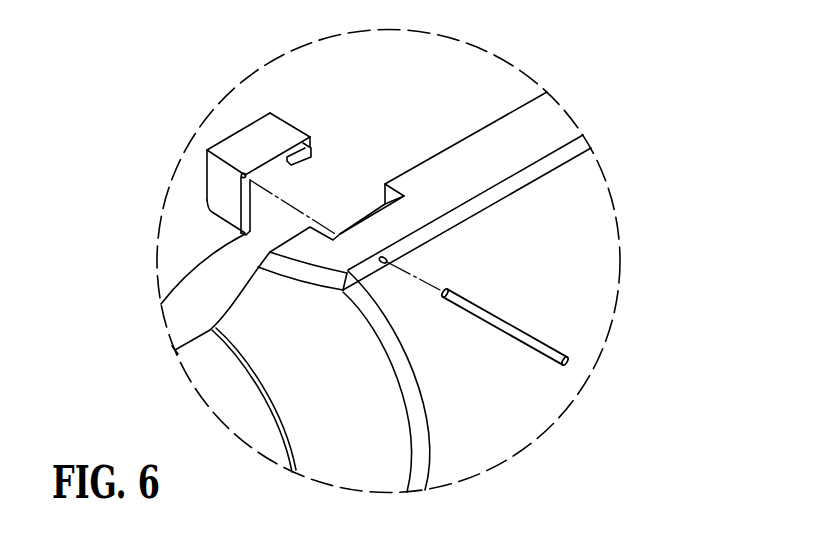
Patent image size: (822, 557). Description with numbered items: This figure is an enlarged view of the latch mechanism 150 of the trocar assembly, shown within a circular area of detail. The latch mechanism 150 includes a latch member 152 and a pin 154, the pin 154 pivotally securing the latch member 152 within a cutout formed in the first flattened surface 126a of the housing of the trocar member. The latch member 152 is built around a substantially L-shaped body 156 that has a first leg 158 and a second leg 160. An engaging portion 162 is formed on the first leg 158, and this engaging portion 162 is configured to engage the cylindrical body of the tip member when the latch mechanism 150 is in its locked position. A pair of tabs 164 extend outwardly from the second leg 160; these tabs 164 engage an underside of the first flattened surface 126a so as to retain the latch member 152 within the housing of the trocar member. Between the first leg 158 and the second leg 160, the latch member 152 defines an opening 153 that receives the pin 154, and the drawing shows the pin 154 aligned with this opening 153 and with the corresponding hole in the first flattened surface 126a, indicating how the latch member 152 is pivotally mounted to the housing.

The first flattened surface 126a is at (488, 142).
The latch mechanism 150 is at (170, 130).
The latch member 152 is at (233, 100).
The opening 153 is at (243, 176).
The pin 154 is at (528, 337).
The substantially L-shaped body 156 is at (230, 137).
The first leg 158 is at (216, 192).
The second leg 160 is at (272, 138).
The engaging portion 162 is at (165, 300).
The tabs 164 is at (300, 147).